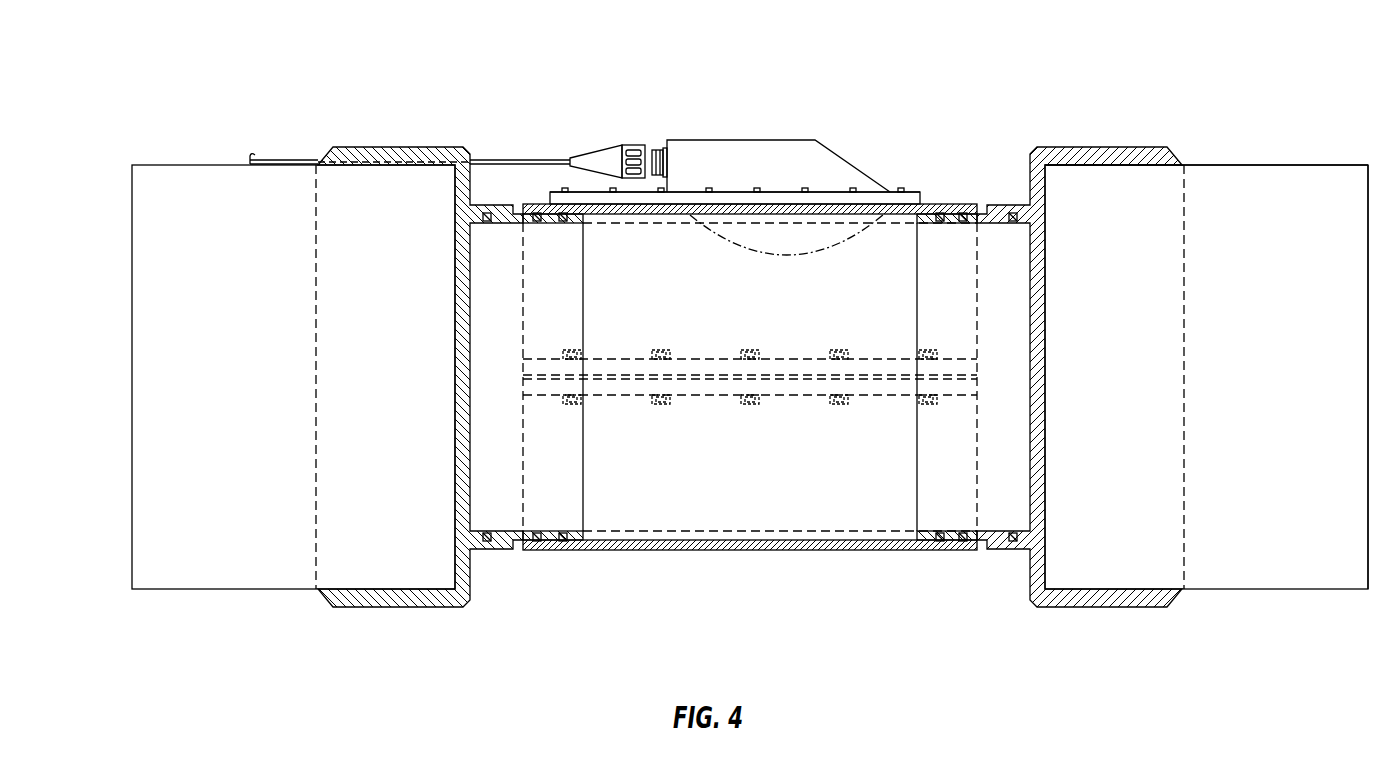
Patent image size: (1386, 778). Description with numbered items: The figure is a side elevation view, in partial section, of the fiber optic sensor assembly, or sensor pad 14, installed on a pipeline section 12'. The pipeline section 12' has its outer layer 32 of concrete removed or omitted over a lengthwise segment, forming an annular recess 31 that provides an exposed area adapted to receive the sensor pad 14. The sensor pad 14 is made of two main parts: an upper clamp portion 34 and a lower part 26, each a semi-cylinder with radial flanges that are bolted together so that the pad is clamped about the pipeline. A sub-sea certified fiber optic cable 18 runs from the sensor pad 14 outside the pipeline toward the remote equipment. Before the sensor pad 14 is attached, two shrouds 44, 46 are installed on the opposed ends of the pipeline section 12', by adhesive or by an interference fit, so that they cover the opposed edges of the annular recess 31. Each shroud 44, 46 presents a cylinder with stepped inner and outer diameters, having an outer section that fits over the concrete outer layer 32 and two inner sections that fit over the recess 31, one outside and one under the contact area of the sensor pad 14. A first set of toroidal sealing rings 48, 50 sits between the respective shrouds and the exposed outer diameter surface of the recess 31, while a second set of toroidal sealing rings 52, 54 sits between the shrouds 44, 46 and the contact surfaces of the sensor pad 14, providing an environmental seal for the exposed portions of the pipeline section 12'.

The fiber optic sensor assembly 14 is at (838, 91).
The sub-sea certified fiber optic cable 18 is at (536, 160).
The annular recess 31 is at (953, 190).
The upper clamp portion 34 is at (823, 287).
The pipeline section 12' is at (1206, 363).
The outer layer of concrete 32 is at (250, 240).
The shroud 44 is at (385, 607).
The shroud 46 is at (1112, 607).
The toroidal sealing ring 48 is at (487, 546).
The toroidal sealing ring 50 is at (1013, 548).
The toroidal sealing rings 52 is at (540, 548).
The toroidal sealing rings 54 is at (963, 548).
The part of sensor pad 26 is at (732, 475).